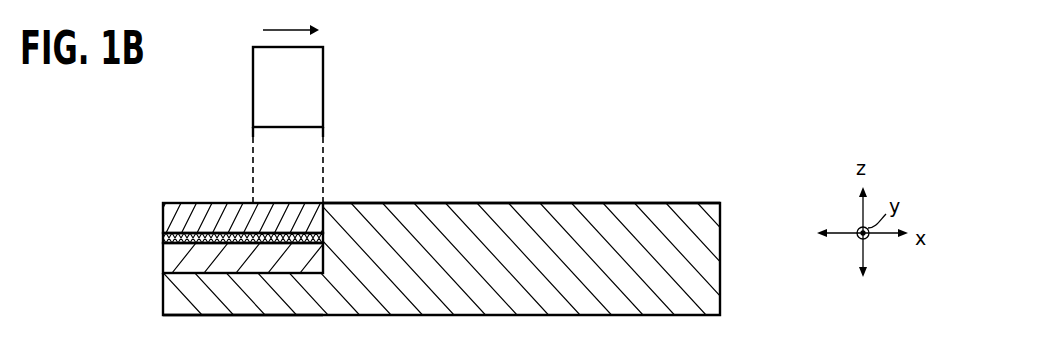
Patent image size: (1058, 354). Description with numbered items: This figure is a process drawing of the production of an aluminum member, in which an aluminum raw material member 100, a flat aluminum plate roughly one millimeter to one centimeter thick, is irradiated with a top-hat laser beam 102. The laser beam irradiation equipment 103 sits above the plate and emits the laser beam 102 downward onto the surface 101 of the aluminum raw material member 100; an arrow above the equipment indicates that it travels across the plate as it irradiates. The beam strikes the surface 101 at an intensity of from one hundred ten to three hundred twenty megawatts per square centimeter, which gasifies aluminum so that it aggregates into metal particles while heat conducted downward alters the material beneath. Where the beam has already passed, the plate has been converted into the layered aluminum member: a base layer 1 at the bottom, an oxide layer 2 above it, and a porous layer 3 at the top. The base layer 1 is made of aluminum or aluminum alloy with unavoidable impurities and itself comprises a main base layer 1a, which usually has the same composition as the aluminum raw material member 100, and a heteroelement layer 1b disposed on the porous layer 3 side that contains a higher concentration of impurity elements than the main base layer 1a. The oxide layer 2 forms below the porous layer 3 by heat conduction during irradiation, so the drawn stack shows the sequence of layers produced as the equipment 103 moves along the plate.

The base layer 1 is at (244, 264).
The main base layer 1a is at (163, 292).
The heteroelement layer 1b is at (163, 258).
The oxide layer 2 is at (163, 239).
The porous layer 3 is at (163, 216).
The aluminum raw material member 100 is at (721, 222).
The surface 101 is at (495, 203).
The top-hat laser beam 102 is at (325, 156).
The laser beam irradiation equipment 103 is at (326, 92).